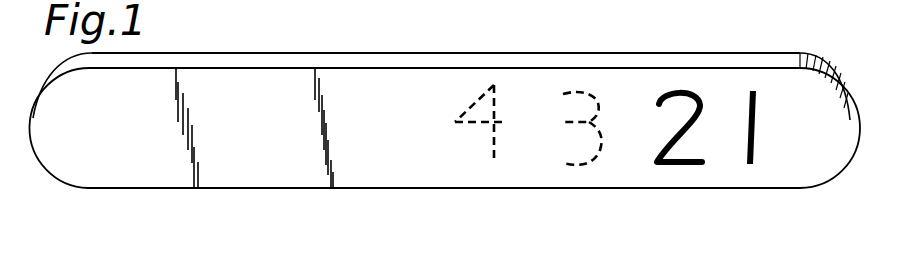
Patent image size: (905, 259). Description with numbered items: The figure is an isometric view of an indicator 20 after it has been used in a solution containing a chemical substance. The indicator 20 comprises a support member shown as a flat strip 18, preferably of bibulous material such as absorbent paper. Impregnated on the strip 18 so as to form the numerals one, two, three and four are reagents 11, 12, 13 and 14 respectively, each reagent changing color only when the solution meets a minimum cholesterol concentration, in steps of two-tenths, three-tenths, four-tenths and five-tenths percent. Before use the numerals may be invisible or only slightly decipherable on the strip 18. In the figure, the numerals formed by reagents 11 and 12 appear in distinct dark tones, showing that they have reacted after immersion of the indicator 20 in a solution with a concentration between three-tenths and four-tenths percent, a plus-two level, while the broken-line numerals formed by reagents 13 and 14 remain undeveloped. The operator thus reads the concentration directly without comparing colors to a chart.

The reagent 11 is at (753, 165).
The reagent 12 is at (680, 167).
The reagent 13 is at (572, 167).
The reagent 14 is at (494, 140).
The flat strip 18 is at (268, 62).
The indicator 20 is at (518, 33).